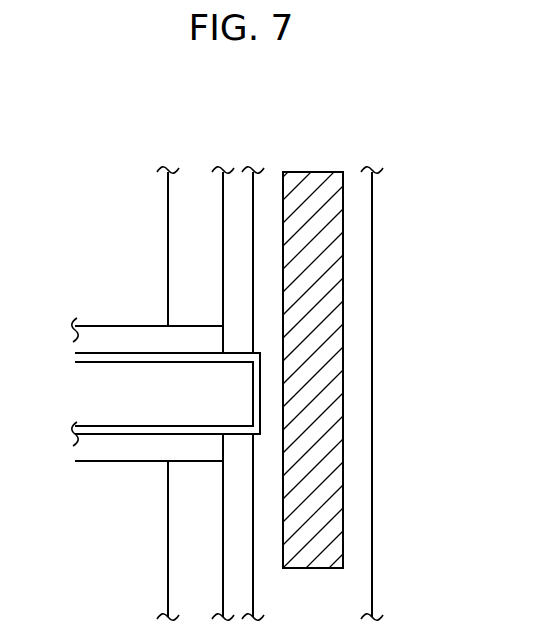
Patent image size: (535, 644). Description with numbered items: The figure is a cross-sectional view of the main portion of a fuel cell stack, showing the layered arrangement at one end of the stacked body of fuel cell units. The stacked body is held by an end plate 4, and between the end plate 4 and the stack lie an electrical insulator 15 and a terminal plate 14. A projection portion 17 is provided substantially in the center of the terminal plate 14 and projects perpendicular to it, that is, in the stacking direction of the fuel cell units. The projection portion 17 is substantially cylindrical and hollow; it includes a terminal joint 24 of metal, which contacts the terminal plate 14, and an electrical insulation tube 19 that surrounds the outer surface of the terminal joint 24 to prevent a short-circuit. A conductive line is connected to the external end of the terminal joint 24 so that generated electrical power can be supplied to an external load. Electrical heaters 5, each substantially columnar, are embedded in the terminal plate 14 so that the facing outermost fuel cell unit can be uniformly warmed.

The end plate 4 is at (197, 182).
The electrical insulator 15 is at (243, 188).
The terminal plate 14 is at (265, 180).
The electrical heater 5 is at (336, 367).
The projection portion 17 is at (117, 326).
The terminal joint 24 is at (110, 428).
The electrical insulation tube 19 is at (123, 452).